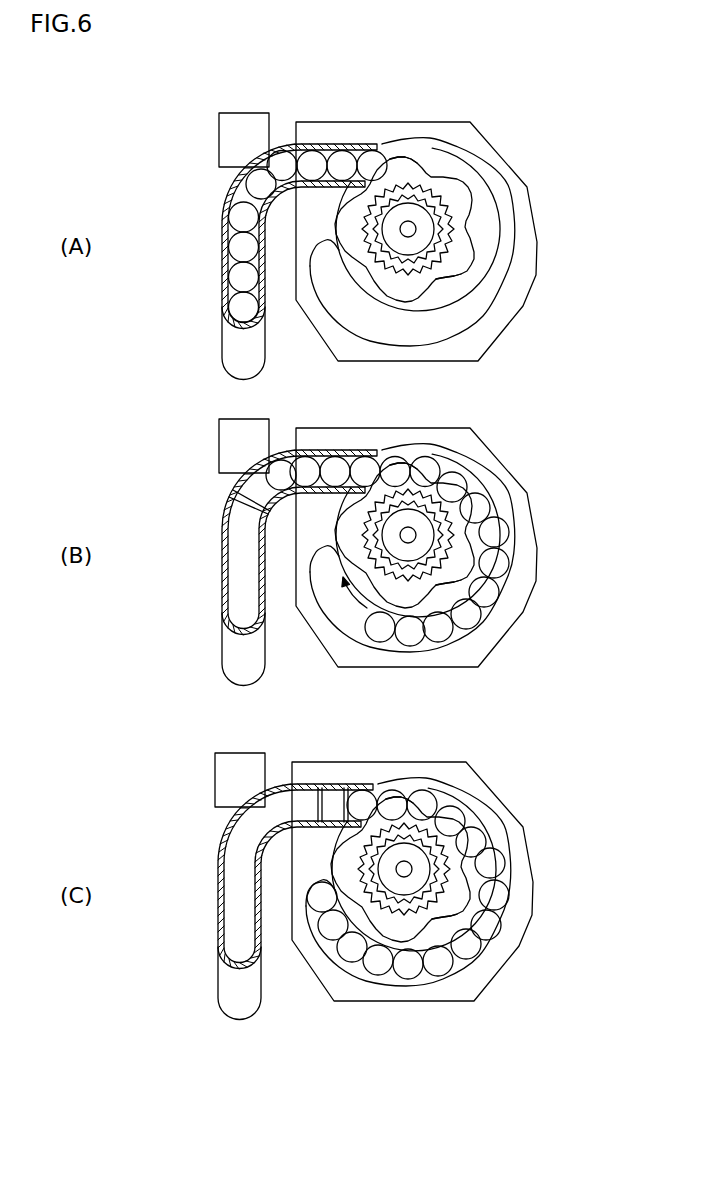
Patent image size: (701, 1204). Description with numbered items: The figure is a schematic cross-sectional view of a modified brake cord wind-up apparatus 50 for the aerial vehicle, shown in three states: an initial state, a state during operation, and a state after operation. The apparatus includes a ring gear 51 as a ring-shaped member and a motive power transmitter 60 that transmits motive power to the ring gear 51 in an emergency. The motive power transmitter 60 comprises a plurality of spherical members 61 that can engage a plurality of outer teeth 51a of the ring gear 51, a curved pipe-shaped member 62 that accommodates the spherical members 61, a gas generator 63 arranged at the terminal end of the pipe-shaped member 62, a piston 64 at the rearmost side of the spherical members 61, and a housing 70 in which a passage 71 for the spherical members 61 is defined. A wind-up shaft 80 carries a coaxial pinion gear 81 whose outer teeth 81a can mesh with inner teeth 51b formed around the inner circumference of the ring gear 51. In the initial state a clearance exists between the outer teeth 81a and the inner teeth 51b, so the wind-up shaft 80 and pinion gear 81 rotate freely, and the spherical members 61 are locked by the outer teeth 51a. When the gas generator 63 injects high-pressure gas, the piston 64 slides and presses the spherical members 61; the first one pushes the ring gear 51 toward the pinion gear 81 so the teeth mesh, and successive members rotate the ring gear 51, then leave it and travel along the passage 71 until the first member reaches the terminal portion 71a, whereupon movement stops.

The brake cord wind-up apparatus 50 is at (600, 139).
The ring gear 51 is at (458, 216).
The outer teeth 51a is at (398, 156).
The inner teeth 51b is at (455, 264).
The motive power transmitter 60 is at (203, 224).
The spherical members 61 is at (227, 272).
The pipe-shaped member 62 is at (222, 329).
The gas generator 63 is at (222, 140).
The piston 64 is at (246, 498).
The housing 70 is at (484, 350).
The passage 71 is at (432, 340).
The terminal portion 71a is at (326, 242).
The wind-up shaft 80 is at (410, 221).
The pinion gear 81 is at (424, 220).
The outer teeth 81a is at (433, 175).